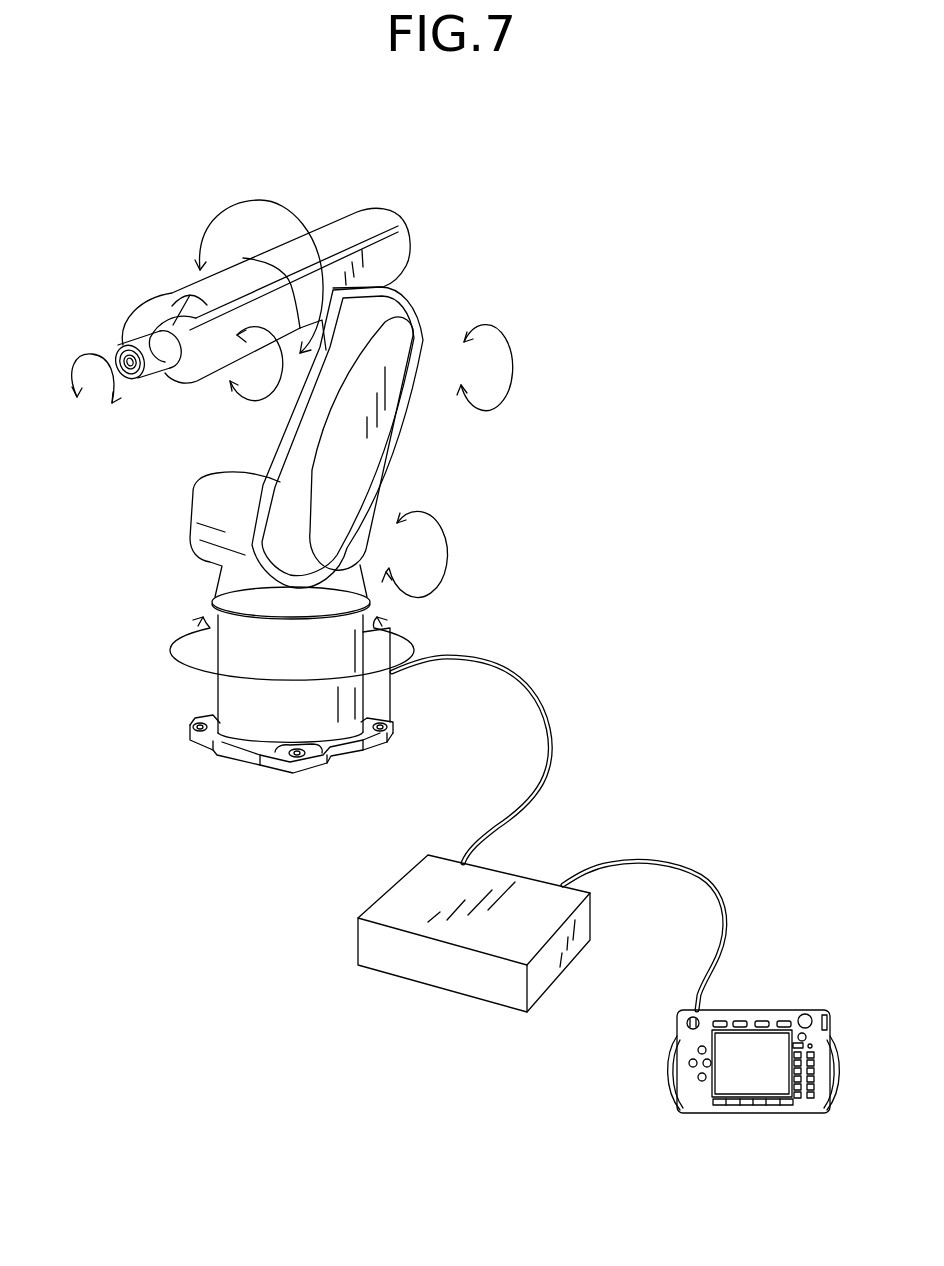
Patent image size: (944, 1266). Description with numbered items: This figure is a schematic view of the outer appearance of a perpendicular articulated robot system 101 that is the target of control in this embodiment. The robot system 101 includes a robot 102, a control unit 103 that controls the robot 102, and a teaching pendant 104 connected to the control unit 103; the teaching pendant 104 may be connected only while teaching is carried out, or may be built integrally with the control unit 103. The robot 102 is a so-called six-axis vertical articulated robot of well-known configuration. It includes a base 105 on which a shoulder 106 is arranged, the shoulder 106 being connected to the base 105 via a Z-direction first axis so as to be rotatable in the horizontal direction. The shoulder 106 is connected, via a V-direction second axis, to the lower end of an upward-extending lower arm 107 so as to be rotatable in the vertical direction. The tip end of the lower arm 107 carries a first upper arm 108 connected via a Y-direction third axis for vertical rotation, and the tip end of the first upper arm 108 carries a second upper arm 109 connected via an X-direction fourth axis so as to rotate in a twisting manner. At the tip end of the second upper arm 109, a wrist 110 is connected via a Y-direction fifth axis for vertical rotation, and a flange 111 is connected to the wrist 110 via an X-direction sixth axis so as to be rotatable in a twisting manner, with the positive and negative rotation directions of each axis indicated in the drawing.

The robot system 101 is at (521, 110).
The robot 102 is at (428, 208).
The control unit 103 is at (428, 986).
The teaching pendant 104 is at (773, 1007).
The base 105 is at (218, 681).
The shoulder 106 is at (218, 572).
The lower arm 107 is at (393, 430).
The first upper arm 108 is at (350, 210).
The second upper arm 109 is at (220, 260).
The wrist 110 is at (172, 302).
The flange 111 is at (143, 380).